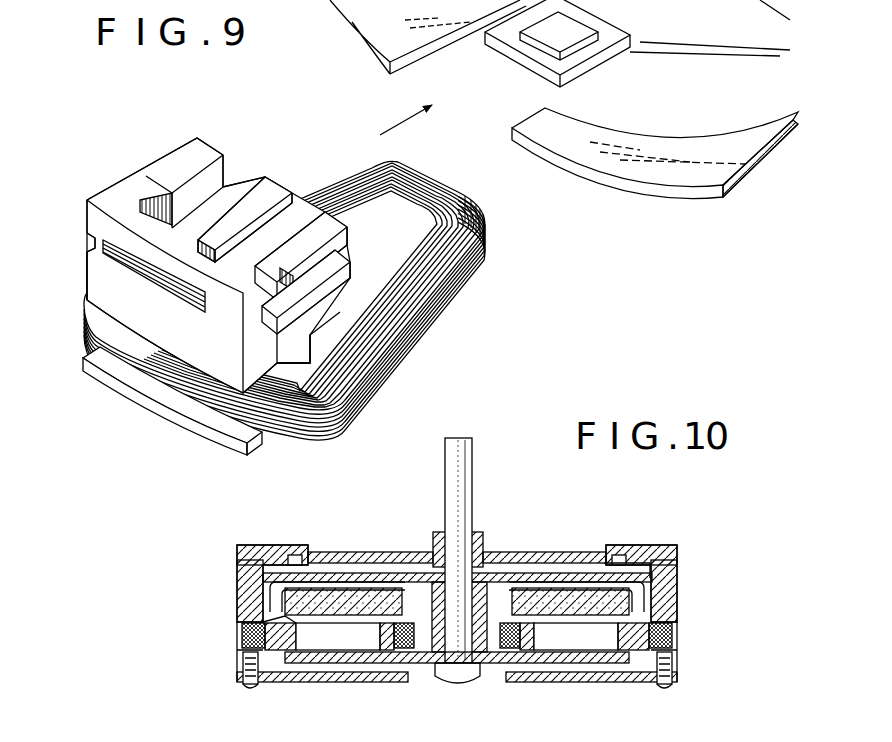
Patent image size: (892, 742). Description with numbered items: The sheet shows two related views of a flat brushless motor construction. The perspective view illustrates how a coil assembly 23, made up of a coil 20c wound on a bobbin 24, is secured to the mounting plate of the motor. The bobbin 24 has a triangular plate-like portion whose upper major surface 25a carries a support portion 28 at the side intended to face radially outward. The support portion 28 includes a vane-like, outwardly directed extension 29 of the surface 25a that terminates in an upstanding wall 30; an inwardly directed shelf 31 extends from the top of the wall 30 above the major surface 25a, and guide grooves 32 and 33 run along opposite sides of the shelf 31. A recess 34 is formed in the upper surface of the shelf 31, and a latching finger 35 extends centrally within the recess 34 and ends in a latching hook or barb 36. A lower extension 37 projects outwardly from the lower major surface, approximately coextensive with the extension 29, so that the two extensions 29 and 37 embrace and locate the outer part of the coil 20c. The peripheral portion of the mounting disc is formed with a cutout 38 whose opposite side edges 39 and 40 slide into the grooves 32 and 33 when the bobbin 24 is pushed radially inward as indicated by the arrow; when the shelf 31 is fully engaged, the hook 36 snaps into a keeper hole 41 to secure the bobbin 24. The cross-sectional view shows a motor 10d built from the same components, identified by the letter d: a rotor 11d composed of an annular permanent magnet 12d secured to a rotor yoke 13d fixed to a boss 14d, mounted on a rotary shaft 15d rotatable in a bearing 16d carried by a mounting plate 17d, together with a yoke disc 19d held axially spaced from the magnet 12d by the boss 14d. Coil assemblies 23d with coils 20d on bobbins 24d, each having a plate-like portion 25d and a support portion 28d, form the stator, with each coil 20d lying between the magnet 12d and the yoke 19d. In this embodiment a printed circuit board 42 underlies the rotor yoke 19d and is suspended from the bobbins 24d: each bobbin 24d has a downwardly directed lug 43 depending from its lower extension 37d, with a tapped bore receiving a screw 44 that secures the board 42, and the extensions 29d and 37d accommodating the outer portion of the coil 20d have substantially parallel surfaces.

In FIG. 9, the coil assembly 23 is at (316, 300).
In FIG. 9, the coil 20c is at (470, 262).
In FIG. 9, the major surface 25a is at (405, 214).
In FIG. 9, the bobbin 24 is at (209, 253).
In FIG. 9, the recess 34 is at (192, 187).
In FIG. 9, the latching finger 35 is at (250, 200).
In FIG. 9, the latching hook 36 is at (280, 212).
In FIG. 9, the shelf 31 is at (333, 287).
In FIG. 9, the guide groove 32 is at (342, 265).
In FIG. 9, the extension 29 is at (300, 357).
In FIG. 9, the upstanding wall 30 is at (107, 293).
In FIG. 9, the guide groove 33 is at (88, 232).
In FIG. 9, the support portion 28 is at (84, 279).
In FIG. 9, the lower extension 37 is at (170, 426).
In FIG. 9, the cutout 38 is at (442, 78).
In FIG. 9, the side edge 39 is at (549, 105).
In FIG. 9, the side edge 40 is at (448, 37).
In FIG. 9, the keeper hole 41 is at (563, 32).
In FIG. 10, the coil assembly 23d is at (235, 575).
In FIG. 10, the support portion 28d is at (236, 561).
In FIG. 10, the annular permanent magnet 12d is at (592, 578).
In FIG. 10, the mounting plate 17d is at (365, 533).
In FIG. 10, the bearing 16d is at (525, 514).
In FIG. 10, the rotor 11d is at (524, 571).
In FIG. 10, the flat brushless motor 10d is at (506, 540).
In FIG. 10, the rotor yoke 13d is at (585, 585).
In FIG. 10, the boss 14d is at (434, 652).
In FIG. 10, the rotary shaft 15d is at (525, 471).
In FIG. 10, the rotor yoke disc 19d is at (382, 664).
In FIG. 10, the printed circuit board 42 is at (327, 683).
In FIG. 10, the coil 20d is at (242, 634).
In FIG. 10, the plate-like portion 25d is at (295, 655).
In FIG. 10, the bobbin 24d is at (276, 657).
In FIG. 10, the extension 29d is at (263, 618).
In FIG. 10, the lower extension 37d is at (240, 648).
In FIG. 10, the lug 43 is at (245, 668).
In FIG. 10, the screw 44 is at (668, 688).